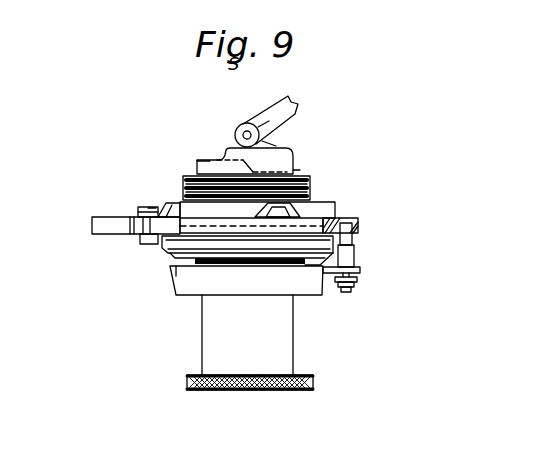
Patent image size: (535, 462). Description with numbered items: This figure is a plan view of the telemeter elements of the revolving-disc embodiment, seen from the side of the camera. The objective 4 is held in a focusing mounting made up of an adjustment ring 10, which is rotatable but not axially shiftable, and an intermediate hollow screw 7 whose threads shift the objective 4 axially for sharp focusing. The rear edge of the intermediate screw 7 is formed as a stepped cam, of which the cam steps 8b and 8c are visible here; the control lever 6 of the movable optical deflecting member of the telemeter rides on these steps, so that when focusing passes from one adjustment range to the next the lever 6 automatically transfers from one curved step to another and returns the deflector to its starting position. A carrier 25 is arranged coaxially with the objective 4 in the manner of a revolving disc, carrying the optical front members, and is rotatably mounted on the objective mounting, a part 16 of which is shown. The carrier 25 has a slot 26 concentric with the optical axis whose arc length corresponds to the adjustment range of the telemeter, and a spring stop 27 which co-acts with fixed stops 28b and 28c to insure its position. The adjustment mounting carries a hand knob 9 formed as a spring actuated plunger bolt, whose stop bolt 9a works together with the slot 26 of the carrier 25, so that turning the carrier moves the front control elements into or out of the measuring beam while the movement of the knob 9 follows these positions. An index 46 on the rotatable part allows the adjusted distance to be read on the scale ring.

The objective 4 is at (273, 340).
The control lever 6 is at (268, 122).
The intermediate hollow screw 7 is at (278, 158).
The cam step 8b is at (210, 160).
The cam step 8c is at (276, 146).
The hand knob 9 is at (345, 293).
The stop bolt 9a is at (348, 230).
The adjustment ring 10 is at (208, 268).
The part of the objective mounting 16 is at (180, 204).
The carrier 25 is at (105, 228).
The slot 26 is at (360, 223).
The spring stop 27 is at (147, 207).
The stop 28b is at (300, 210).
The stop 28c is at (155, 208).
The index 46 is at (168, 270).